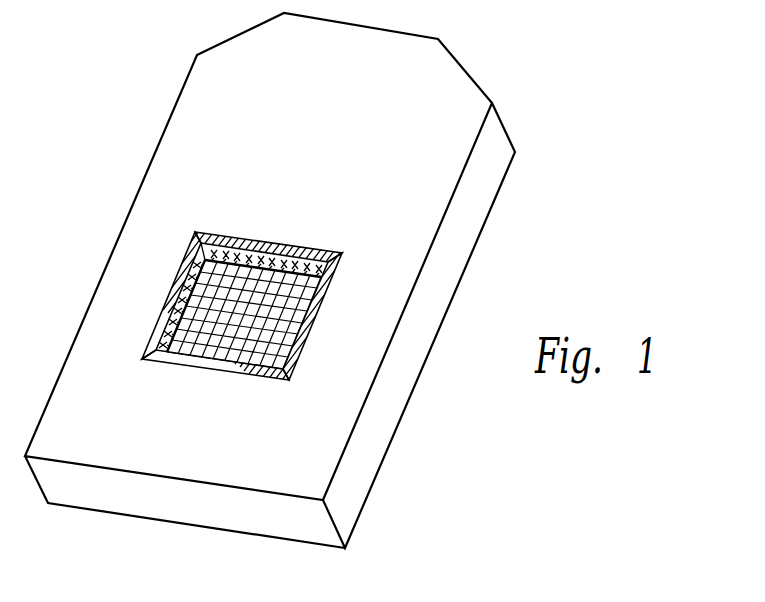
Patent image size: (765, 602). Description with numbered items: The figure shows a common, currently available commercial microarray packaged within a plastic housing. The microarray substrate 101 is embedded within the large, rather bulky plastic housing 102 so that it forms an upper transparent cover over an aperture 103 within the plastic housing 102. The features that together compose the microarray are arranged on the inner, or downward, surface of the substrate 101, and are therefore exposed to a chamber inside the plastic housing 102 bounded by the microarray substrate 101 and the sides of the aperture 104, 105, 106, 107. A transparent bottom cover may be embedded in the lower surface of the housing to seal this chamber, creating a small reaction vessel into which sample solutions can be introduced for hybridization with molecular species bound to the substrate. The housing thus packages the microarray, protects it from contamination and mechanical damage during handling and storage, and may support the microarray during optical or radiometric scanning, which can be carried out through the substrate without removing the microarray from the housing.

The microarray substrate 101 is at (293, 262).
The plastic housing 102 is at (388, 408).
The aperture 103 is at (254, 260).
The side of the aperture 104 is at (313, 252).
The side of the aperture 105 is at (315, 327).
The side of the aperture 106 is at (215, 376).
The side of the aperture 107 is at (183, 262).